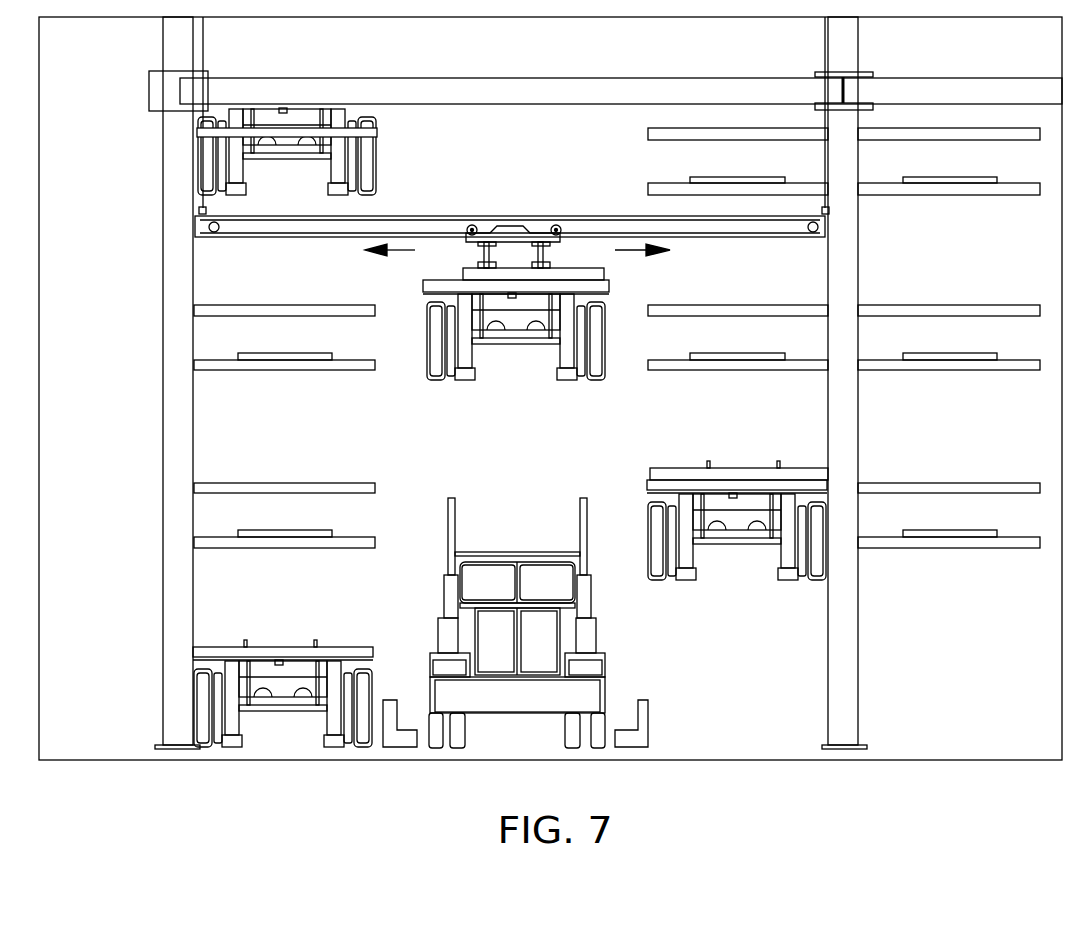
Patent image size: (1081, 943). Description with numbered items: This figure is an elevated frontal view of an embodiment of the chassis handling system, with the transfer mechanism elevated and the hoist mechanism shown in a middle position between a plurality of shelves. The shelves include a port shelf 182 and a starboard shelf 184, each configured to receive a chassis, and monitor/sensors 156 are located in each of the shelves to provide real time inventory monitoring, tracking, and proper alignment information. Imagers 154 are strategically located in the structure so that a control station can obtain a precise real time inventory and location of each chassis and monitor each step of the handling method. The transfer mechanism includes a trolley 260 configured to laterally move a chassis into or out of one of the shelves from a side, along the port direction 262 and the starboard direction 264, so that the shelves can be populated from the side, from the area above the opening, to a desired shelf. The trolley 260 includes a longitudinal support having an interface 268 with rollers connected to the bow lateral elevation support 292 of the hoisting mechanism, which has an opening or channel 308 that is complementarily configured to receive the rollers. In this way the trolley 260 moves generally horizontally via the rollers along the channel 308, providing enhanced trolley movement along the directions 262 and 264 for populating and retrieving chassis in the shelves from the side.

The imager 154 is at (202, 620).
The monitor/sensor 156 is at (285, 311).
The port shelf 182 is at (628, 372).
The starboard shelf 184 is at (386, 372).
The trolley 260 is at (516, 265).
The port direction 262 is at (638, 251).
The starboard direction 264 is at (398, 251).
The interface 268 is at (510, 231).
The bow lateral elevation support 292 is at (600, 226).
The channel 308 is at (422, 226).